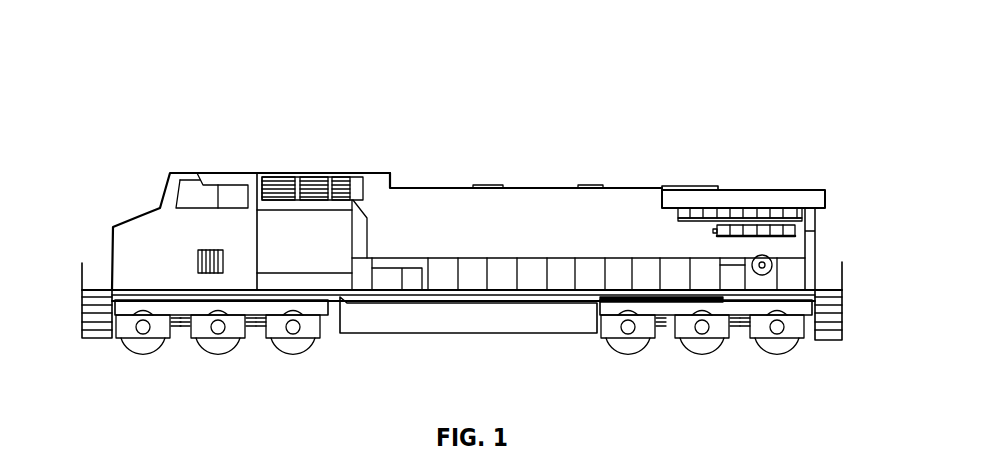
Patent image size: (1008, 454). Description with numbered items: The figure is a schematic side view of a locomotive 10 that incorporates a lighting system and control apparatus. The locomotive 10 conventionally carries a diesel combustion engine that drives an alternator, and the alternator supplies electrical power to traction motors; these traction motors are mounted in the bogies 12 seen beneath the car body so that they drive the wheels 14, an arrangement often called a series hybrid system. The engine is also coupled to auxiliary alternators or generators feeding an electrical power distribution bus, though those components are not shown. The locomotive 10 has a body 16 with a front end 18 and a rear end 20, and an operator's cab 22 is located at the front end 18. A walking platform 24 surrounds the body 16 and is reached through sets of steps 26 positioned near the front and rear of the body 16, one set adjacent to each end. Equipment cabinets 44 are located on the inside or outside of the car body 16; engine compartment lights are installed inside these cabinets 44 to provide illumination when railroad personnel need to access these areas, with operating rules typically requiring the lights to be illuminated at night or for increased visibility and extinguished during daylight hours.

The locomotive 10 is at (549, 117).
The bogies 12 is at (183, 308).
The wheels 14 is at (293, 338).
The body 16 is at (623, 200).
The front end 18 is at (78, 205).
The rear end 20 is at (852, 205).
The operator's cab 22 is at (186, 182).
The walking platform 24 is at (502, 290).
The steps 26 is at (100, 323).
The equipment cabinets 44 is at (308, 252).